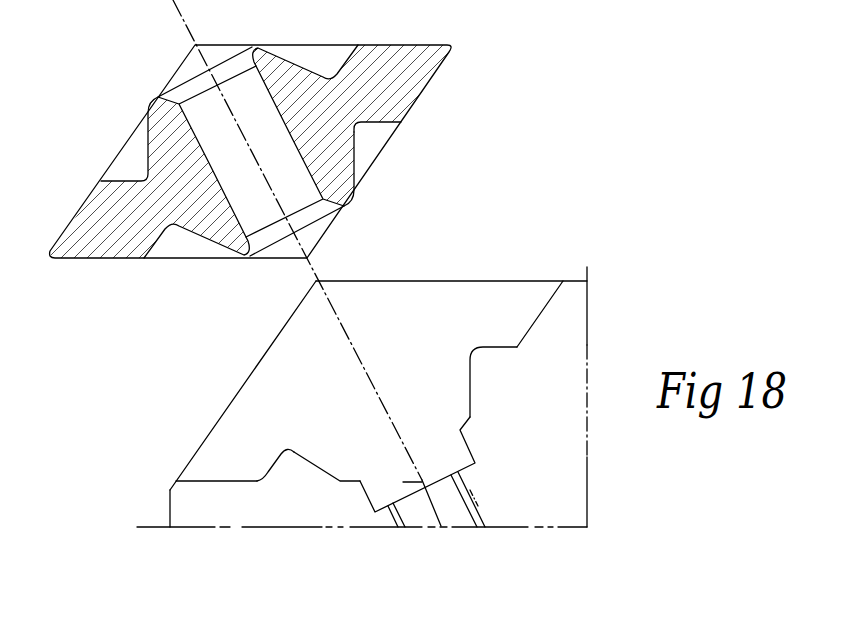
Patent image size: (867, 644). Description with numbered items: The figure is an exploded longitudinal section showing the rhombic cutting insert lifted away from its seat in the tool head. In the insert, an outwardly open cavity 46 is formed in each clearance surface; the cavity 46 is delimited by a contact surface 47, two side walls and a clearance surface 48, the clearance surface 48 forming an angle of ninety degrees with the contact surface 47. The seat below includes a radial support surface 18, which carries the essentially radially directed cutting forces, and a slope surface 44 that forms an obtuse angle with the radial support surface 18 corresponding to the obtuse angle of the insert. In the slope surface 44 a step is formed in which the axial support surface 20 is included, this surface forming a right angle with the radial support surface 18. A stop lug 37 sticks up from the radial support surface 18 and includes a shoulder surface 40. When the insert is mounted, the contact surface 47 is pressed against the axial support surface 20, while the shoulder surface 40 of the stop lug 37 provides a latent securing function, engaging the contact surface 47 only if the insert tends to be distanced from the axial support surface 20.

The cavity 46 is at (117, 137).
The clearance surface 48 is at (383, 125).
The contact surface 47 is at (354, 160).
The slope surface 44 is at (538, 320).
The axial support surface 20 is at (469, 379).
The stop lug 37 is at (290, 432).
The shoulder surface 40 is at (317, 464).
The radial support surface 18 is at (222, 480).